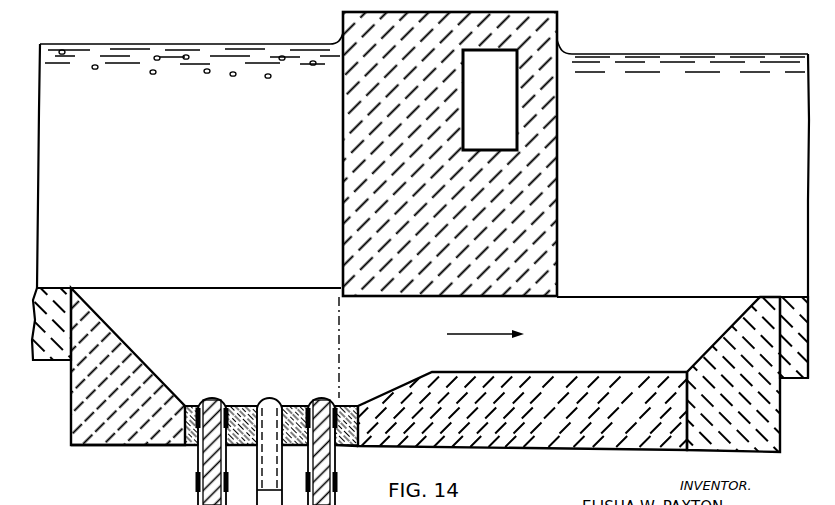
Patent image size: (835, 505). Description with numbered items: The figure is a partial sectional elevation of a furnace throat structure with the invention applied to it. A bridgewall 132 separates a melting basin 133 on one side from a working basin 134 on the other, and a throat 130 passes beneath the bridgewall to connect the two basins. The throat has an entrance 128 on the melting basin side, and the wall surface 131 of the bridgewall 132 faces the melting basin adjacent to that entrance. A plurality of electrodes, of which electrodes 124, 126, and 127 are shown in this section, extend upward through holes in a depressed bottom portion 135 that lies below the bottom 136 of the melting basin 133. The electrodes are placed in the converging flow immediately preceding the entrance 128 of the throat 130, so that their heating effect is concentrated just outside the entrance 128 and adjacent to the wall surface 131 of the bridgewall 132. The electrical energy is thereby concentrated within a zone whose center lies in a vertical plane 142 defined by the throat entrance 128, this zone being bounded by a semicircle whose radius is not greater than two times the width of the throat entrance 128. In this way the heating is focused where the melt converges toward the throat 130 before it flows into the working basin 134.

The electrode 124 is at (333, 385).
The electrode 126 is at (290, 383).
The electrode 127 is at (240, 382).
The entrance 128 is at (328, 306).
The throat 130 is at (656, 344).
The wall surface 131 is at (343, 126).
The bridgewall 132 is at (360, 32).
The melting basin 133 is at (201, 84).
The working basin 134 is at (689, 90).
The depressed bottom portion 135 is at (192, 406).
The bottom 136 is at (50, 288).
The vertical plane 142 is at (340, 345).